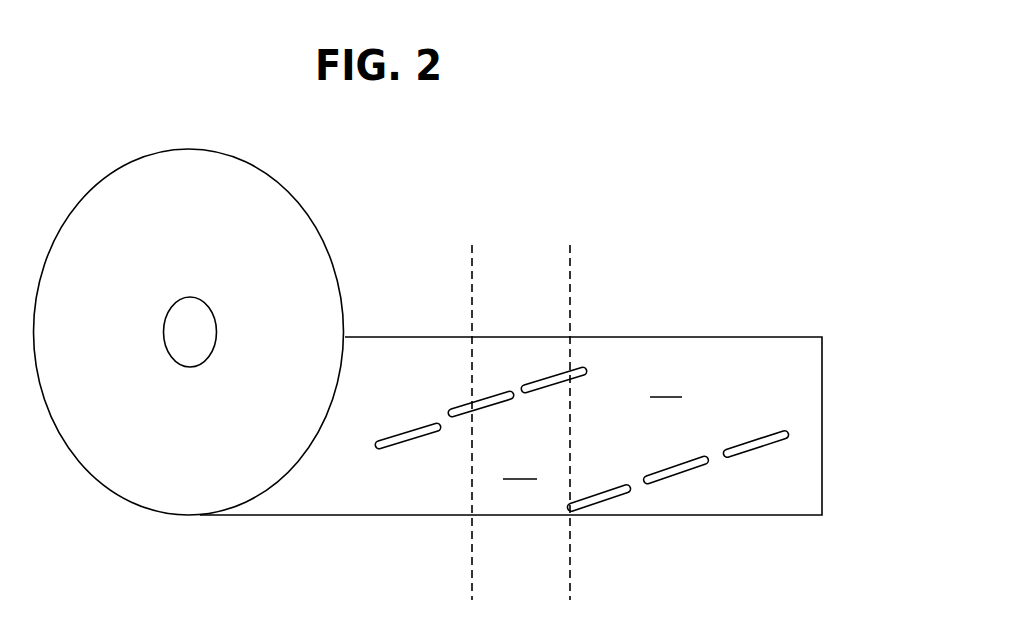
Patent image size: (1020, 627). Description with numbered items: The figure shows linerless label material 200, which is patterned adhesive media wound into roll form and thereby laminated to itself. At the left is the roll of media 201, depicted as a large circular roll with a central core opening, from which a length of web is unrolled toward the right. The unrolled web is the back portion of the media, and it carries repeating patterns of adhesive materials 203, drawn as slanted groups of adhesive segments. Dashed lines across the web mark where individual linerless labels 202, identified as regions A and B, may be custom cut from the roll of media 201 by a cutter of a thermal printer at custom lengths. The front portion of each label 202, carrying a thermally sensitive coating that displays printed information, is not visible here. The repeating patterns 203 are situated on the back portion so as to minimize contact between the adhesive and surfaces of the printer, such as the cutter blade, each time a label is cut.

The linerless label material 200 is at (618, 135).
The roll of media 201 is at (175, 149).
The linerless label 202 is at (510, 497).
The repeating patterns of adhesive materials 203 is at (538, 393).